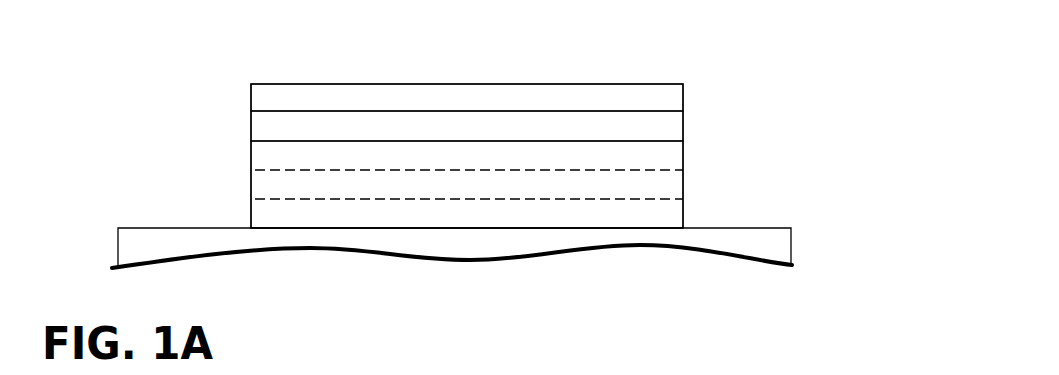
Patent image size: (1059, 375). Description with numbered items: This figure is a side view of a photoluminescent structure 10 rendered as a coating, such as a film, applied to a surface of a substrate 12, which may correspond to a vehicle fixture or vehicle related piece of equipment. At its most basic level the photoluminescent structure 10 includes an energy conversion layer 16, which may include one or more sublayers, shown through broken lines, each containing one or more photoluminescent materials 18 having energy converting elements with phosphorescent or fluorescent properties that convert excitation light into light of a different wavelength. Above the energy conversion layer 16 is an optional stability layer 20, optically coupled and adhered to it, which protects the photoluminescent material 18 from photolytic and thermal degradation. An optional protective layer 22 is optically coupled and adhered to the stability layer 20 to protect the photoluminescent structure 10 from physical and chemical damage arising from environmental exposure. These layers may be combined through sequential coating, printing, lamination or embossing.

The photoluminescent structure 10 is at (616, 54).
The substrate 12 is at (731, 228).
The energy conversion layer 16 is at (251, 182).
The photoluminescent material 18 is at (634, 185).
The stability layer 20 is at (251, 125).
The protective layer 22 is at (348, 84).